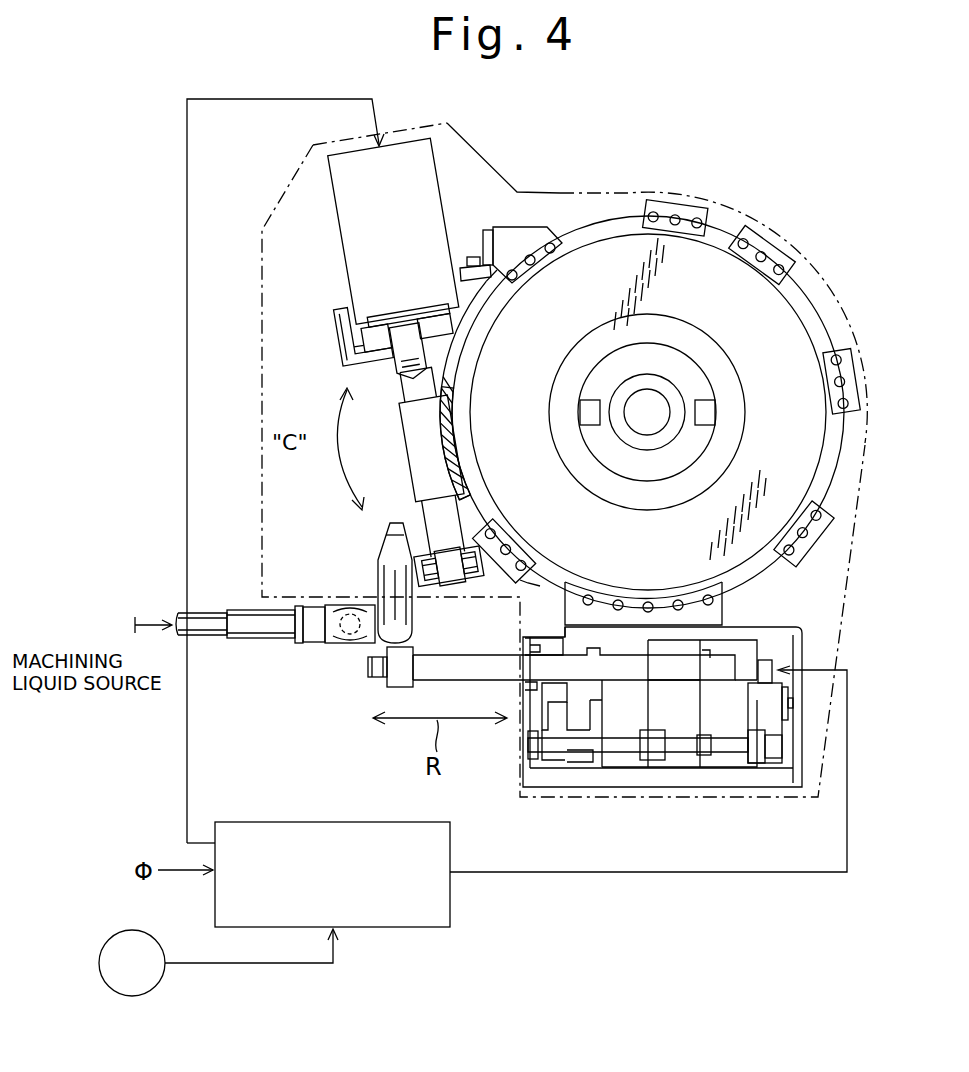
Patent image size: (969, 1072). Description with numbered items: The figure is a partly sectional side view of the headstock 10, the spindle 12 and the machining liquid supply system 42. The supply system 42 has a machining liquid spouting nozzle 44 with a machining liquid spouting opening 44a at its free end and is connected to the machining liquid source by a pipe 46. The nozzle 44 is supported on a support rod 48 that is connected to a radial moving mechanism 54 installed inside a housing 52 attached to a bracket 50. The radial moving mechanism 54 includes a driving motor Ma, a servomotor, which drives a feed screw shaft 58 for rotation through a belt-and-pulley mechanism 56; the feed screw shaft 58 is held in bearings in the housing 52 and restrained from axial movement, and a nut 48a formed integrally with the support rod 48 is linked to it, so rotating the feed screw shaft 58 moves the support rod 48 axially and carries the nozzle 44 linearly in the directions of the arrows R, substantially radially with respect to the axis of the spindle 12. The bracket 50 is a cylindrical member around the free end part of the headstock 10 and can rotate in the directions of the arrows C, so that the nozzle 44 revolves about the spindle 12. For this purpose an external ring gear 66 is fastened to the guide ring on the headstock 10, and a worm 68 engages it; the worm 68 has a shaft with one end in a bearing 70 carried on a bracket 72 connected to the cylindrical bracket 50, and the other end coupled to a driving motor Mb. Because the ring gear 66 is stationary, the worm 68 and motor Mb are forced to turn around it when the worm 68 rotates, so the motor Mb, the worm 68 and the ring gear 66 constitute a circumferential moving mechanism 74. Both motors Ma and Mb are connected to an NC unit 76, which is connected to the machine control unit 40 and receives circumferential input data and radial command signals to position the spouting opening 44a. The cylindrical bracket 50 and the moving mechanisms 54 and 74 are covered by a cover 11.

The headstock 10 is at (698, 238).
The cover 11 is at (558, 192).
The spindle 12 is at (710, 355).
The machine control unit 40 is at (218, 962).
The machining liquid supply system 42 is at (294, 592).
The machining liquid spouting nozzle 44 is at (380, 545).
The machining liquid spouting opening 44a is at (345, 514).
The pipe 46 is at (255, 628).
The support rod 48 is at (488, 660).
The nut 48a is at (585, 712).
The bracket 50 is at (463, 370).
The housing 52 is at (806, 770).
The radial moving mechanism 54 is at (633, 758).
The belt-and-pulley mechanism 56 is at (780, 737).
The feed screw shaft 58 is at (617, 747).
The external ring gear 66 is at (465, 408).
The worm 68 is at (432, 458).
The bearing 70 is at (430, 596).
The bracket 72 is at (528, 583).
The circumferential moving mechanism 74 is at (322, 355).
The NC unit 76 is at (388, 928).
The driving motor Ma is at (740, 655).
The driving motor Mb is at (362, 238).